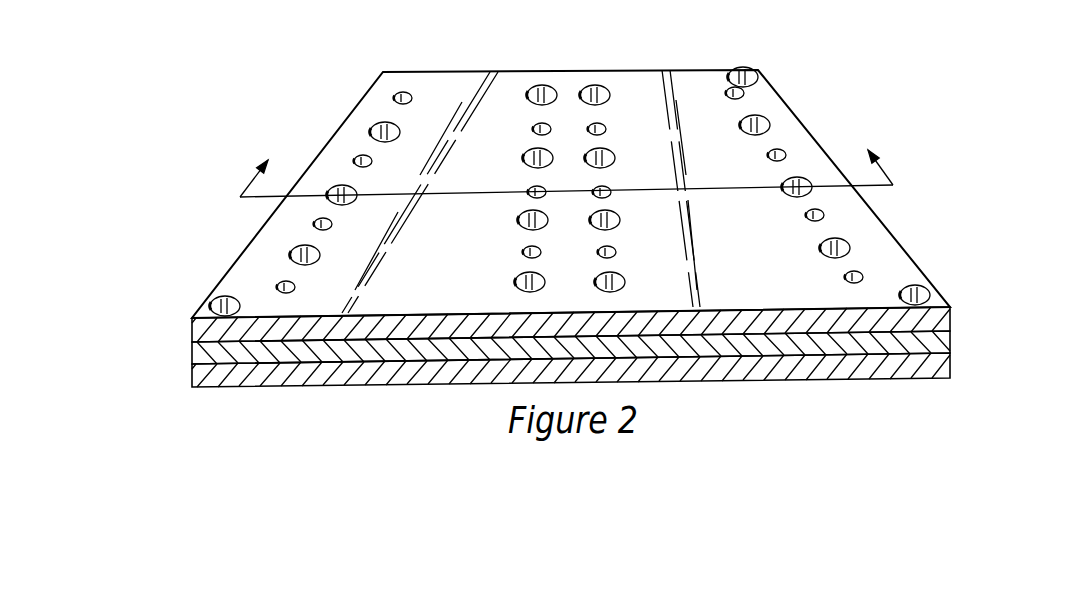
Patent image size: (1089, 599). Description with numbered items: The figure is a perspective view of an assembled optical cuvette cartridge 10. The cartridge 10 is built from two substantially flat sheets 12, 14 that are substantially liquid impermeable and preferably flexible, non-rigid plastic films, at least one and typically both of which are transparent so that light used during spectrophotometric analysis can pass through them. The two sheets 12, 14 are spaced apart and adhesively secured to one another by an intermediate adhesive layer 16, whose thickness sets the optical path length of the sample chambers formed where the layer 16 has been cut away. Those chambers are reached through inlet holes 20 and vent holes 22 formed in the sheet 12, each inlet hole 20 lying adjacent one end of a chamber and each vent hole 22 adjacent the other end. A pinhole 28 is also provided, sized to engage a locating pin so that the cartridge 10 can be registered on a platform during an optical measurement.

The optical cuvette cartridge 10 is at (878, 122).
The flat sheet 12 is at (945, 316).
The flat sheet 14 is at (945, 363).
The intermediate adhesive layer 16 is at (945, 342).
The inlet hole 20 is at (548, 90).
The vent hole 22 is at (405, 93).
The pinhole 28 is at (223, 312).